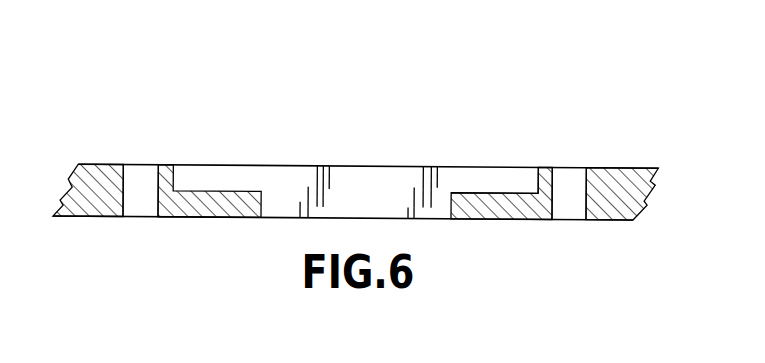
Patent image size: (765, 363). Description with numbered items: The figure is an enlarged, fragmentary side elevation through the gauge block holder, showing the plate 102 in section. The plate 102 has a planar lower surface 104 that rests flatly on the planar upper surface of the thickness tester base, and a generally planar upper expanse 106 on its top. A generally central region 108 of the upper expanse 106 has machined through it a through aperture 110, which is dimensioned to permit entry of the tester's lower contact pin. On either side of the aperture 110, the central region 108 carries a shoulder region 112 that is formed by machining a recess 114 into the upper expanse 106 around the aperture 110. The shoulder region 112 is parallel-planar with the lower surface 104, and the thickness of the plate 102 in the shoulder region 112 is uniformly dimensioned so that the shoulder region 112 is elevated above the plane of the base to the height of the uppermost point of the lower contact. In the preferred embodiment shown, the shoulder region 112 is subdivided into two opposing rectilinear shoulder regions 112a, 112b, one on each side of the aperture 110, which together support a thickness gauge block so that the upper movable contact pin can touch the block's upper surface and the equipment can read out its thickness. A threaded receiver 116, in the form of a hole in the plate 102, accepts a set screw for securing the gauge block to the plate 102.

The plate 102 is at (632, 167).
The planar lower surface 104 is at (107, 218).
The upper expanse 106 is at (93, 156).
The central region 108 is at (309, 124).
The through aperture 110 is at (395, 167).
The shoulder region 112 is at (209, 243).
The first shoulder region 112a is at (232, 190).
The second shoulder region 112b is at (478, 190).
The recess 114 is at (125, 182).
The threaded receiver 116 is at (583, 183).